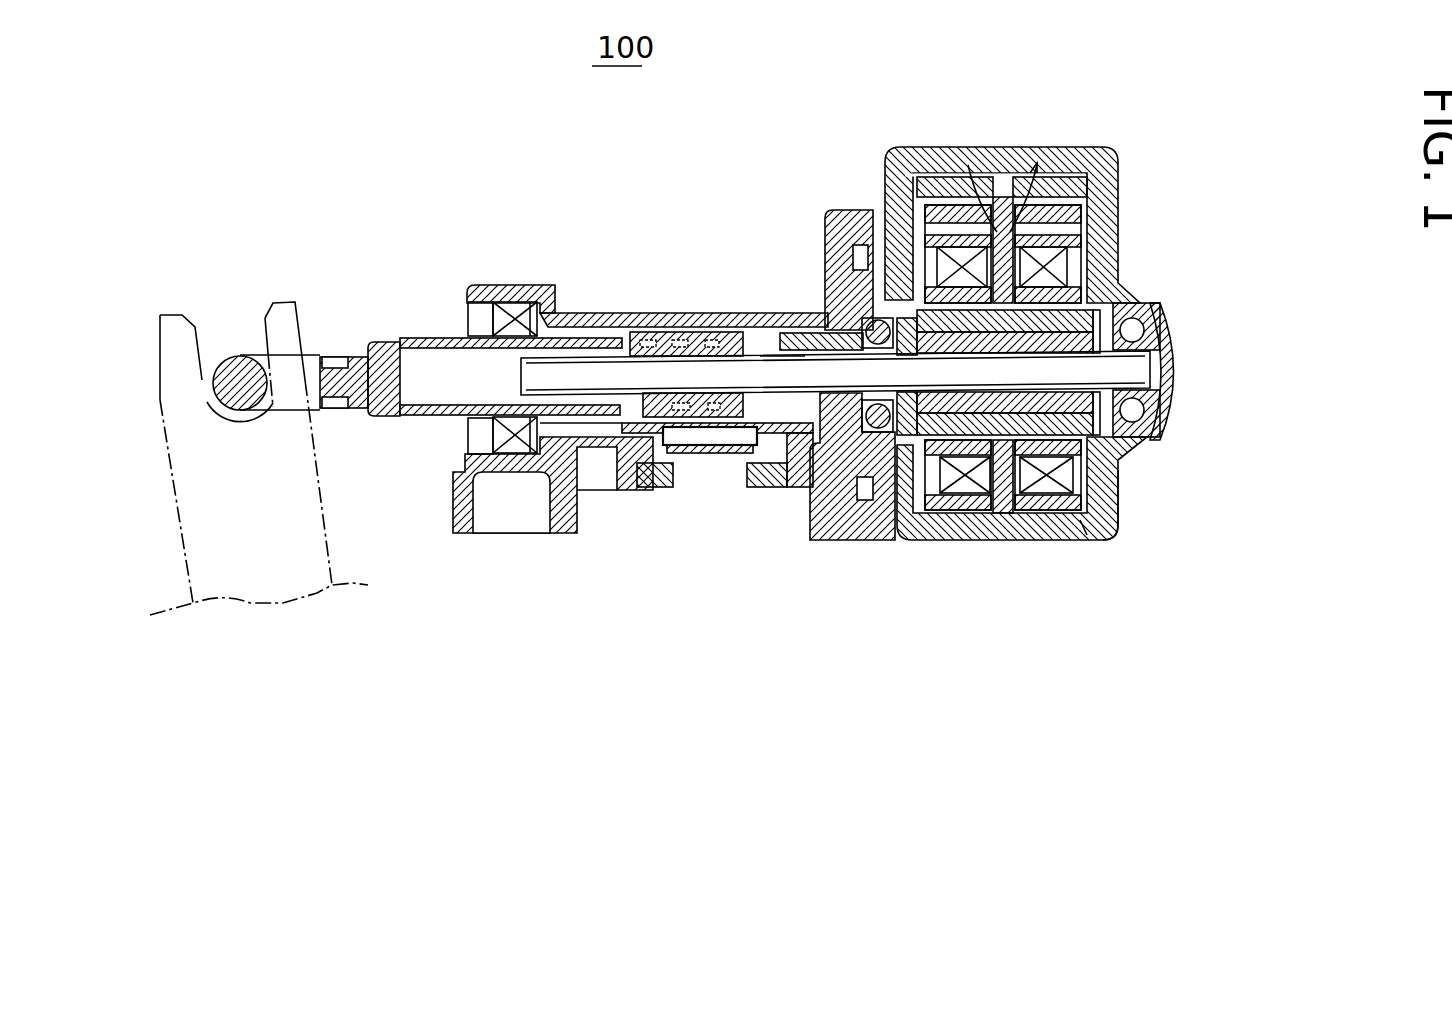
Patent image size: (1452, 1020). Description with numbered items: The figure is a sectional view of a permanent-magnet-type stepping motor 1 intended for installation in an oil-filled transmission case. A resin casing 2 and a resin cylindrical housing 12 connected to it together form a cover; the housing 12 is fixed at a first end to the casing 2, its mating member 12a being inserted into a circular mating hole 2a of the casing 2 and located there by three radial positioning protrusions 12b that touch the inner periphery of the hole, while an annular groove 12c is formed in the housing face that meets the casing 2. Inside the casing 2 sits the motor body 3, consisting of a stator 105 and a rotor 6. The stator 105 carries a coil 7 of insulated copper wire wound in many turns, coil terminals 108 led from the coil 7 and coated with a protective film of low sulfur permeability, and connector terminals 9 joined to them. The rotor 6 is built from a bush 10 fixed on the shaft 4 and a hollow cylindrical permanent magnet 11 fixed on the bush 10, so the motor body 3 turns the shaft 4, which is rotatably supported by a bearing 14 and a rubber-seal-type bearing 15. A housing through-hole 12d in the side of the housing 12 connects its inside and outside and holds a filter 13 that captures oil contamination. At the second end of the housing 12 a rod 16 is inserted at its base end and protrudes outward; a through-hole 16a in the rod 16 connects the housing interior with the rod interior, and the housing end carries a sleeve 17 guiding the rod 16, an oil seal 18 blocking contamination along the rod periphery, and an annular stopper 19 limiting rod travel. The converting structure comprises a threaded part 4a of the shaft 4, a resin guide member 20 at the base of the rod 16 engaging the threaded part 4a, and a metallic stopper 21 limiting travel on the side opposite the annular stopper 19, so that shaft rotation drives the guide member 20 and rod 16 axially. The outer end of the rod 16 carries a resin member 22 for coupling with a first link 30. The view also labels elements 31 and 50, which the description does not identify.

The permanent-magnet-type stepping motor 1 is at (1068, 362).
The resin casing 2 is at (1100, 172).
The circular mating hole 2a is at (823, 300).
The motor body 3 is at (1090, 207).
The shaft 4 is at (1122, 373).
The threaded part 4a is at (777, 352).
The rotor 6 is at (1102, 334).
The coil 7 is at (1060, 269).
The connector terminals 9 is at (1060, 172).
The bush 10 is at (1110, 432).
The hollow cylindrical permanent-magnet 11 is at (1123, 477).
The resin cylindrical housing 12 is at (500, 283).
The mating member 12a is at (885, 280).
The positioning protrusions 12b is at (826, 522).
The annular groove 12c is at (857, 262).
The housing through-hole 12d is at (718, 468).
The filter 13 is at (692, 455).
The bearing 14 is at (1137, 306).
The bearing 15 is at (915, 522).
The rod 16 is at (427, 338).
The through-hole 16a is at (827, 265).
The sleeve 17 is at (466, 432).
The oil seal 18 is at (508, 453).
The annular stopper 19 is at (530, 472).
The resin guide member 20 is at (727, 350).
The metallic stopper 21 is at (813, 310).
The resin member 22 is at (340, 355).
The first link 30 is at (283, 300).
The ball 31 is at (632, 343).
The lead wire 50 is at (1087, 535).
The stator 105 is at (1047, 493).
The coil terminals 108 is at (992, 170).